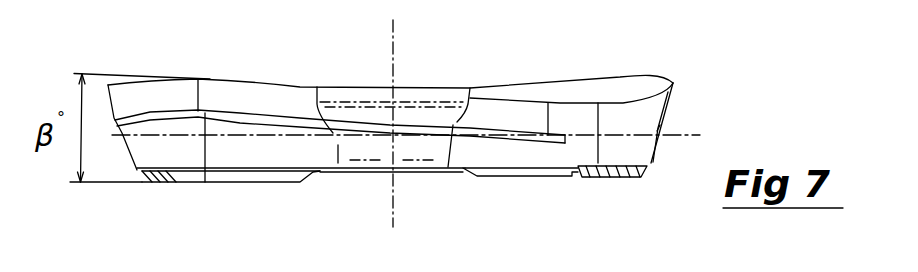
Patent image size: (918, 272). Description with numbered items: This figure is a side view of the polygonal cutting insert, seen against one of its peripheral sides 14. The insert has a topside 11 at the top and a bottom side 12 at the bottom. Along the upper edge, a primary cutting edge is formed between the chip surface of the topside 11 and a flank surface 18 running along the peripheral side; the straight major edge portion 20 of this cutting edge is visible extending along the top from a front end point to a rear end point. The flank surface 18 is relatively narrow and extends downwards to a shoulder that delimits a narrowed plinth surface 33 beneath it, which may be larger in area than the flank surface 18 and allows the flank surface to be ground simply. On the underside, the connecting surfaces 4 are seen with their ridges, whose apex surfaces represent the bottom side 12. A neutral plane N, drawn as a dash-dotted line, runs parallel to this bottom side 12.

The major edge portion 20 is at (248, 80).
The flank surface 18 is at (288, 100).
The topside 11 is at (438, 73).
The peripheral side 14 is at (120, 154).
The plinth surface 33 is at (270, 150).
The bottom side 12 is at (440, 187).
The connecting surface 4 is at (537, 175).
The neutral plane N is at (673, 135).